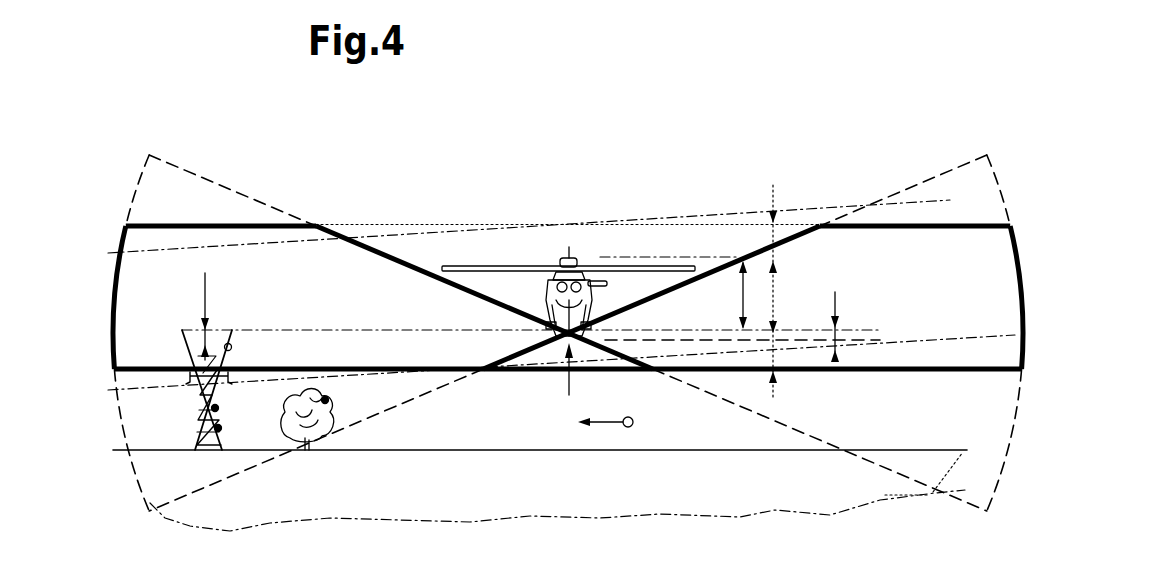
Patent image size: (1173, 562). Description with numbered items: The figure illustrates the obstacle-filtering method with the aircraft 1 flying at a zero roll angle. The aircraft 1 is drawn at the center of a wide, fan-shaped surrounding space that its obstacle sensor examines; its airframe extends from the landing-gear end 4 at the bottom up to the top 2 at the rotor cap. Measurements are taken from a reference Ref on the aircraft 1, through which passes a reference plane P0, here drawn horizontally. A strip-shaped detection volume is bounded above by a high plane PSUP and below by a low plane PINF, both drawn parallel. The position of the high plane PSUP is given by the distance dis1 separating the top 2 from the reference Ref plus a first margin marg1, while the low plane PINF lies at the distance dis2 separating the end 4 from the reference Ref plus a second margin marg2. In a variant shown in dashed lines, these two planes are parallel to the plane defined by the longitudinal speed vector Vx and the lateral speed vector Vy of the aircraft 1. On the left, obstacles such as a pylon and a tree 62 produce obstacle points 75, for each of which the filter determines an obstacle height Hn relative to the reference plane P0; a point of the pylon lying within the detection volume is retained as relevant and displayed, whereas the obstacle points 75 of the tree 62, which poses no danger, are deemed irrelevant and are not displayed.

The aircraft 1 is at (584, 247).
The top 2 is at (571, 256).
The end 4 is at (592, 345).
The tree 62 is at (348, 418).
The obstacle point 75 is at (215, 408).
The reference plane P0 is at (403, 330).
The reference Ref is at (548, 293).
The high plane PSUP is at (866, 224).
The low plane PINF is at (864, 372).
The first margin marg1 is at (774, 190).
The second margin marg2 is at (774, 396).
The distance separating the top and the reference dis1 is at (743, 284).
The distance separating the end of the landing gear and the reference dis2 is at (835, 296).
The obstacle height Hn is at (187, 316).
The longitudinal speed vector Vx is at (634, 424).
The lateral speed vector Vy is at (607, 424).